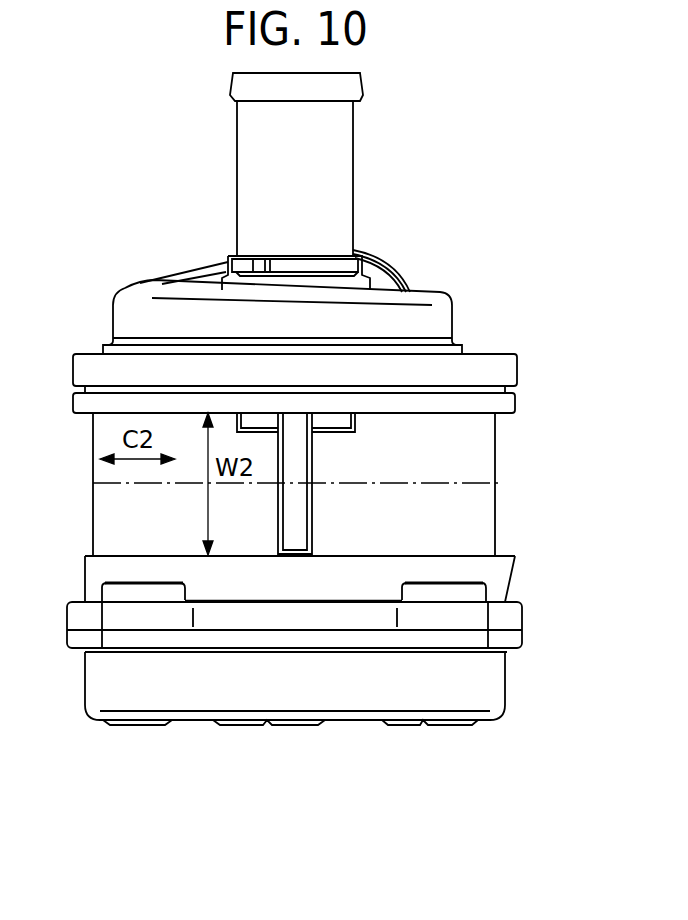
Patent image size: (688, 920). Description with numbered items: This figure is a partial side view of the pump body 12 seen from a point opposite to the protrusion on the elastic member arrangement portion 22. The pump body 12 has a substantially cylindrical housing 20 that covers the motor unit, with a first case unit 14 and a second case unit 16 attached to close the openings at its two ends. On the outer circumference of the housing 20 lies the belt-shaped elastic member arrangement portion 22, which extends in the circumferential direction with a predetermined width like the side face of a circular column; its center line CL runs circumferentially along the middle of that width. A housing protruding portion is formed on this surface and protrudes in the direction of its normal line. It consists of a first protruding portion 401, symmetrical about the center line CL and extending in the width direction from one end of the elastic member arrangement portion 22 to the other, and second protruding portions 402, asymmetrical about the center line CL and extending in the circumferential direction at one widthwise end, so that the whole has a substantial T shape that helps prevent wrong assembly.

The pump body 12 is at (120, 281).
The first case unit 14 is at (409, 292).
The second case unit 16 is at (505, 678).
The housing 20 is at (523, 617).
The elastic member arrangement portion 22 is at (470, 456).
The first protruding portion 401 is at (295, 523).
The second protruding portions 402 is at (254, 424).
The center line CL is at (455, 490).